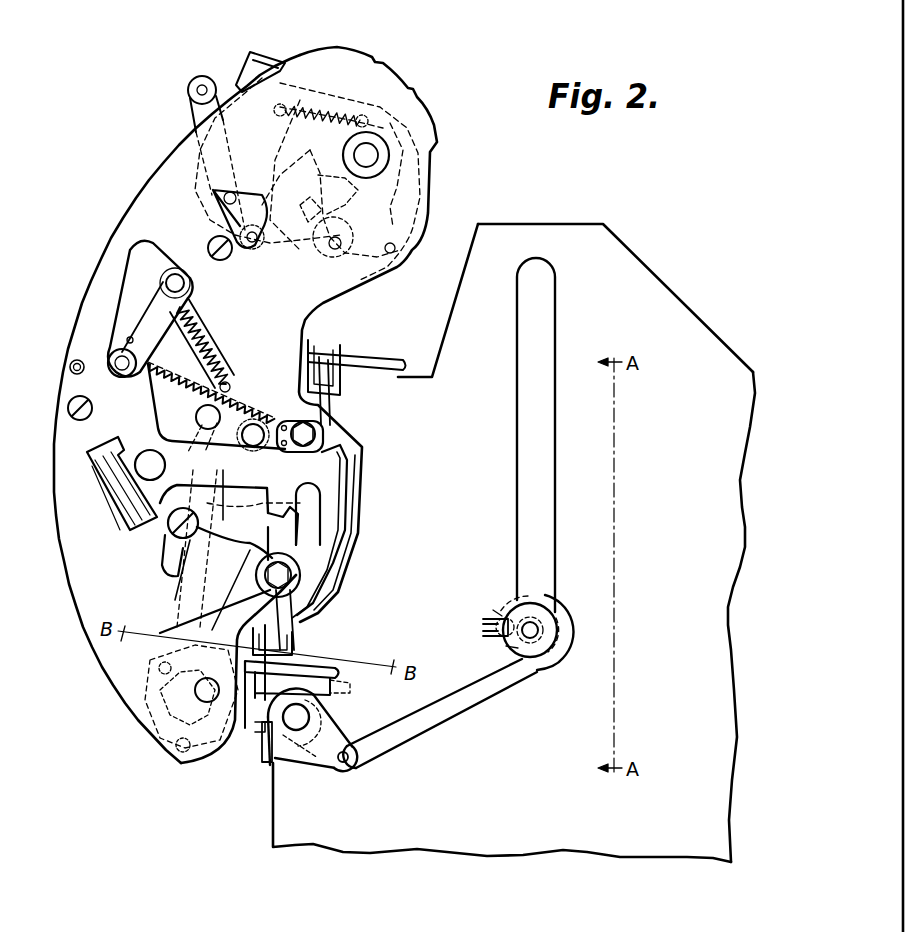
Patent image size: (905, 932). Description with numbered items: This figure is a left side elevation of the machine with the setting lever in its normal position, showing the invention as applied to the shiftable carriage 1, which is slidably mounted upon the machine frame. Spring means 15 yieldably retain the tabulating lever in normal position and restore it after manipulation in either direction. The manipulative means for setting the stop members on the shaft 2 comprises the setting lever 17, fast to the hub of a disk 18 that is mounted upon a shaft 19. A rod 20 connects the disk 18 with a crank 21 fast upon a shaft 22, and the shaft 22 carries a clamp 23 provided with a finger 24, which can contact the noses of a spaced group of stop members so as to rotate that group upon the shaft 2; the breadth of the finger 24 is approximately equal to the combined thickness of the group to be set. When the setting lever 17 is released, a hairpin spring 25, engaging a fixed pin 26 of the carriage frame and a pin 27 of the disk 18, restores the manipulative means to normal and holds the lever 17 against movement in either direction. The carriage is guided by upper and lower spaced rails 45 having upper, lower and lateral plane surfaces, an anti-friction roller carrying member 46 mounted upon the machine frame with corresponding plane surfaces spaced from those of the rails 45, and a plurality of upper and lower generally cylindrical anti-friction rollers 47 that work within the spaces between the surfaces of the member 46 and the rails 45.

The shiftable carriage 1 is at (78, 584).
The shaft 2 is at (207, 695).
The spring means 15 is at (137, 702).
The setting lever 17 is at (542, 427).
The disk 18 is at (568, 633).
The shaft 19 is at (543, 627).
The rod 20 is at (447, 716).
The crank 21 is at (347, 731).
The shaft 22 is at (289, 724).
The clamp 23 is at (296, 745).
The finger 24 is at (262, 740).
The hairpin spring 25 is at (500, 616).
The fixed pin 26 is at (490, 625).
The pin 27 is at (507, 641).
The rails 45 is at (350, 405).
The anti-friction roller carrying member 46 is at (348, 356).
The anti-friction rollers 47 is at (262, 640).